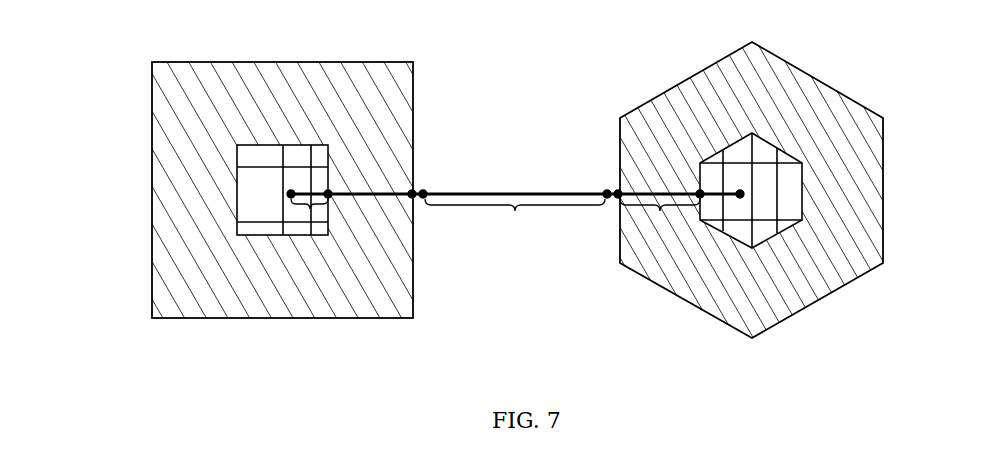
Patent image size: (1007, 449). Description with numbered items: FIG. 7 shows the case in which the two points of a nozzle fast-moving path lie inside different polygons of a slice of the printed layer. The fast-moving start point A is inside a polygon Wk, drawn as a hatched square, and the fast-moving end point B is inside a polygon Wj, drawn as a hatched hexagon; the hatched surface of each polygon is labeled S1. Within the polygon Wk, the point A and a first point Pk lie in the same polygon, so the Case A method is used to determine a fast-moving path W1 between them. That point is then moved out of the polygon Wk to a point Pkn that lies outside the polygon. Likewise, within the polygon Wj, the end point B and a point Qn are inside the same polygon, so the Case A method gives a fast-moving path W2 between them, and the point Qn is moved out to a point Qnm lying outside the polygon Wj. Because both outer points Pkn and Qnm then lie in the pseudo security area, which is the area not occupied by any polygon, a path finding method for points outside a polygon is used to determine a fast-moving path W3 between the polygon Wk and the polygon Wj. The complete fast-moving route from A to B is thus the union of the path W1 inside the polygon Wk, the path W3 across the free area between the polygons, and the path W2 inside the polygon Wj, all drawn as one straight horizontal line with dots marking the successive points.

The hatched surface region S1 is at (183, 195).
The polygon Wk is at (282, 221).
The polygon Wj is at (751, 211).
The fast-moving start point A is at (282, 190).
The fast-moving end point B is at (751, 190).
The point Pk is at (399, 181).
The point Pkn is at (435, 181).
The point Qnm is at (592, 181).
The point Qn is at (632, 181).
The fast-moving path W1 is at (329, 218).
The fast-moving path W2 is at (662, 218).
The fast-moving path W3 is at (515, 223).